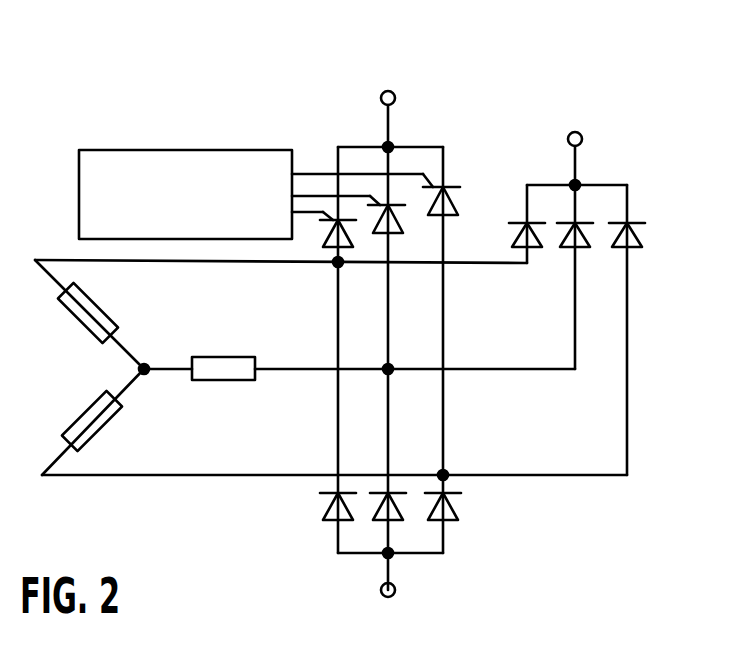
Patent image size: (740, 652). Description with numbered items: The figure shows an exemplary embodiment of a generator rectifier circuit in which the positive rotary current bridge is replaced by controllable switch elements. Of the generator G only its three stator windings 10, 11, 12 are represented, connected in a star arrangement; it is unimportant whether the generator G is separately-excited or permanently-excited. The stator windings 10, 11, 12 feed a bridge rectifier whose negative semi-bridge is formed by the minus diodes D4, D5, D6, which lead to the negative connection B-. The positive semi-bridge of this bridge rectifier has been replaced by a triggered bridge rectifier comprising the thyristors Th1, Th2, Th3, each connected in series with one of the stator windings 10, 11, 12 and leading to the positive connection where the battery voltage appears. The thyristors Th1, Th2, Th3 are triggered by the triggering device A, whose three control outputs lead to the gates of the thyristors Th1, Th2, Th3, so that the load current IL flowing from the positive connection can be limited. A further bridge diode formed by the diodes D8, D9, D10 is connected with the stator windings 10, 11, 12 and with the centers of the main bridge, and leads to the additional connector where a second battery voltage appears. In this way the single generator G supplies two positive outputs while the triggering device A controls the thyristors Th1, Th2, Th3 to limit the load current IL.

The triggering device A is at (178, 162).
The thyristor Th1 is at (326, 242).
The thyristor Th2 is at (377, 236).
The thyristor Th3 is at (460, 204).
The minus diode D4 is at (328, 507).
The minus diode D5 is at (376, 507).
The minus diode D6 is at (450, 520).
The diode D8 is at (512, 240).
The diode D9 is at (563, 240).
The diode D10 is at (637, 240).
The stator winding 10 is at (207, 365).
The stator winding 11 is at (97, 310).
The stator winding 12 is at (97, 410).
The generator G is at (157, 397).
The negative connection B- is at (409, 592).
The load current IL is at (374, 346).